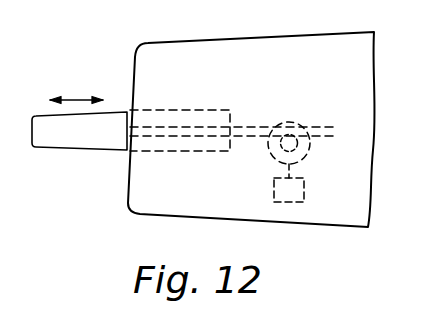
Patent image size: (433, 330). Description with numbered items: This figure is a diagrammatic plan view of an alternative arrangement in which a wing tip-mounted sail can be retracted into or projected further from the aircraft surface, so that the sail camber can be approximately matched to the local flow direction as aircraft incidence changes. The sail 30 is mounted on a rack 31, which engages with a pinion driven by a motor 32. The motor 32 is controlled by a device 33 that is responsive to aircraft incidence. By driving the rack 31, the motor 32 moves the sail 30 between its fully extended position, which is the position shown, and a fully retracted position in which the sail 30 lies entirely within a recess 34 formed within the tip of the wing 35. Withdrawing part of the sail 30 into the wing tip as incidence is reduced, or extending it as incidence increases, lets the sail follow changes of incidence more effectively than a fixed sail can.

The sail 30 is at (99, 149).
The rack 31 is at (203, 129).
The motor 32 is at (293, 121).
The device responsive to aircraft incidence 33 is at (272, 184).
The recess 34 is at (158, 114).
The wing 35 is at (186, 207).